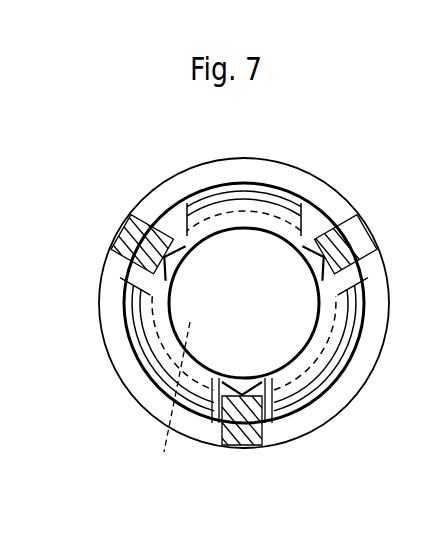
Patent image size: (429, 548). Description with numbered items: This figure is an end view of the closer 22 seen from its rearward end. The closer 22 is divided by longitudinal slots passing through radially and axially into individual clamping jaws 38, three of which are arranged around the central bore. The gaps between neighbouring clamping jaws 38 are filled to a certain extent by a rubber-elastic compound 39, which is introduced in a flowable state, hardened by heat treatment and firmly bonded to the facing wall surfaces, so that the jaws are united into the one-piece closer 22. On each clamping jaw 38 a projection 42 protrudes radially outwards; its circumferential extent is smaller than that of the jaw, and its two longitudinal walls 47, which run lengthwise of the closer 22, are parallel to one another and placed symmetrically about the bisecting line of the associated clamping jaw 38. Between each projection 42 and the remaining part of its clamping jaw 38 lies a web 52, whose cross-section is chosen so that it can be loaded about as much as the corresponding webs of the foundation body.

The closer 22 is at (336, 176).
The clamping jaw 38 is at (160, 200).
The rubber-elastic compound 39 is at (352, 233).
The projection 42 is at (243, 200).
The longitudinal wall 47 is at (187, 222).
The web 52 is at (174, 402).